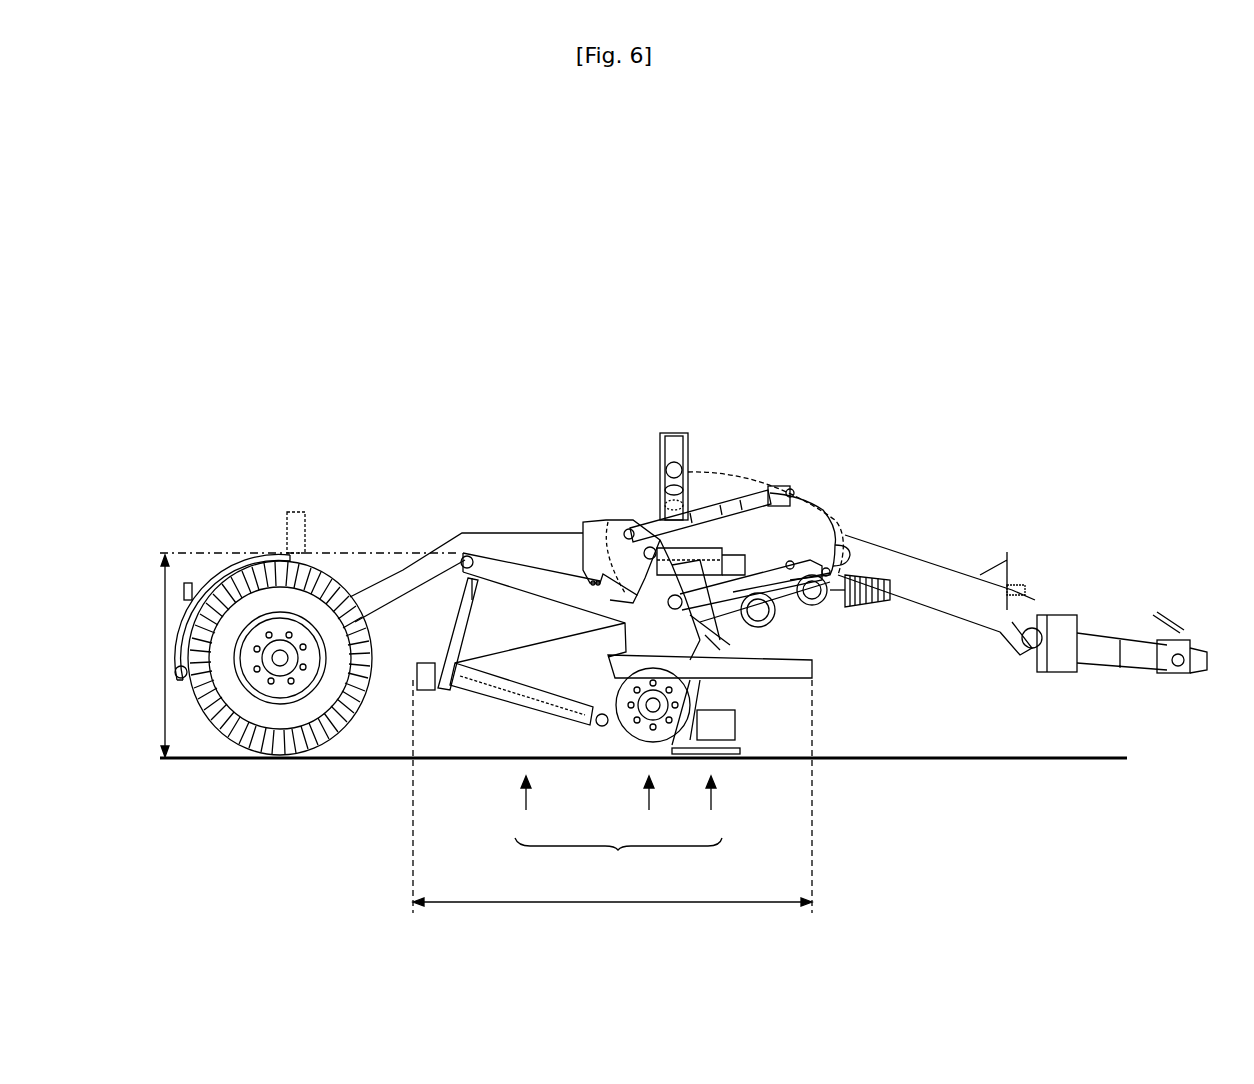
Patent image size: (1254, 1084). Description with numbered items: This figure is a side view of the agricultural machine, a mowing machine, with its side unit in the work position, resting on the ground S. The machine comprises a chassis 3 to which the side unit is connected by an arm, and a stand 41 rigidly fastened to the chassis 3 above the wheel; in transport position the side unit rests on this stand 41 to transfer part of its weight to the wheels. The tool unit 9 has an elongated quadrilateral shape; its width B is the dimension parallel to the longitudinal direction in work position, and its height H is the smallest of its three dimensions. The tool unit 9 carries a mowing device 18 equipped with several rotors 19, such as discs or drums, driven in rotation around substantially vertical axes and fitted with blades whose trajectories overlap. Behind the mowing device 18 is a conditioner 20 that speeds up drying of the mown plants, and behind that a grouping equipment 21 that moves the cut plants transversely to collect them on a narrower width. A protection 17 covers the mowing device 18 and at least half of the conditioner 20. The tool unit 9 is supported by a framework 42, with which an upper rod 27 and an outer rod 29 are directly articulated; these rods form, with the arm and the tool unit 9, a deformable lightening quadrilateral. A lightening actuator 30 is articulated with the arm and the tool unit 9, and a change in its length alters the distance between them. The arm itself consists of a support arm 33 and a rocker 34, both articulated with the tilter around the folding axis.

The chassis 3 is at (540, 552).
The tool unit 9 is at (618, 857).
The protection 17 is at (640, 663).
The mowing device 18 is at (711, 812).
The rotors 19 is at (733, 743).
The conditioner 20 is at (649, 812).
The grouping equipment 21 is at (526, 812).
The upper rod 27 is at (722, 515).
The outer rod 29 is at (712, 593).
The lightening actuator 30 is at (703, 560).
The support arm 33 is at (817, 532).
The rocker 34 is at (660, 450).
The stand 41 is at (293, 538).
The framework 42 is at (633, 570).
The height H is at (167, 678).
The width B is at (667, 898).
The ground S is at (963, 760).